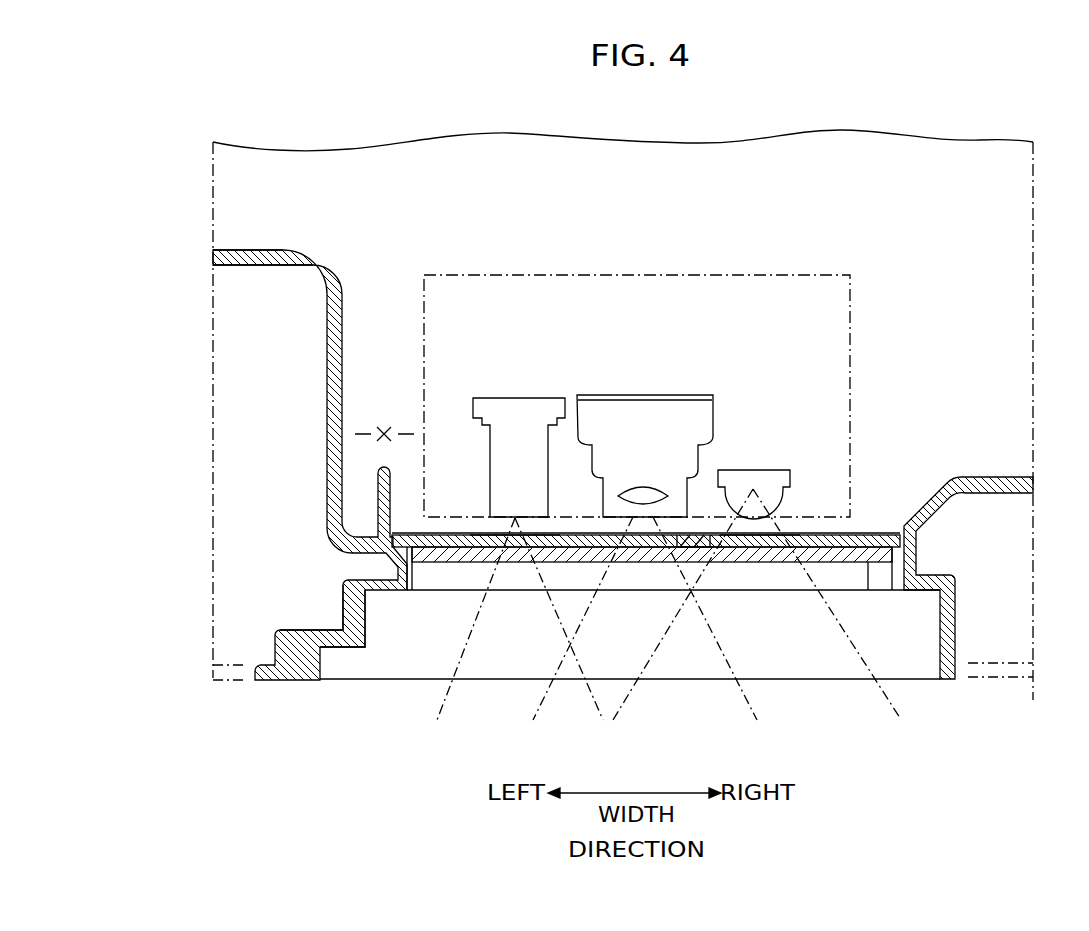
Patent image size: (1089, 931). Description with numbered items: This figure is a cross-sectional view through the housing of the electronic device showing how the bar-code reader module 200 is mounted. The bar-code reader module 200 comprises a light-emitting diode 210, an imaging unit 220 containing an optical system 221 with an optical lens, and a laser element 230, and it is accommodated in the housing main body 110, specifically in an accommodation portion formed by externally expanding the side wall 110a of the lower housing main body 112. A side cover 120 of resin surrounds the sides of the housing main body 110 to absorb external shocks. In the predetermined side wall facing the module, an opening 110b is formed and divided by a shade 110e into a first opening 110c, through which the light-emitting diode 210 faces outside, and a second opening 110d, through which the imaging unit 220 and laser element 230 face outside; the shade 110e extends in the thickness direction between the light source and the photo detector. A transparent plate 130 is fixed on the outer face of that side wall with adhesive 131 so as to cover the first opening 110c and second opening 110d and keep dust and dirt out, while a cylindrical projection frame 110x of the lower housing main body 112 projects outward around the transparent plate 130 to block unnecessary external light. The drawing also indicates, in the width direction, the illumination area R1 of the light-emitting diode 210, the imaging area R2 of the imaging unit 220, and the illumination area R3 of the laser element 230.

The housing main body 110 is at (327, 497).
The lower housing main body 112 is at (310, 465).
The side wall 110a is at (253, 266).
The opening 110b is at (915, 533).
The first opening 110c is at (800, 535).
The second opening 110d is at (483, 535).
The shade 110e is at (693, 535).
The projection frame 110x is at (343, 604).
The side cover 120 is at (1010, 683).
The transparent plate 130 is at (870, 565).
The adhesive 131 is at (862, 548).
The bar-code reader module 200 is at (421, 378).
The light-emitting diode 210 is at (762, 470).
The imaging unit 220 is at (605, 396).
The optical system 221 is at (660, 488).
The laser element 230 is at (515, 398).
The illumination area R1 is at (890, 700).
The imaging area R2 is at (745, 690).
The illumination area R3 is at (445, 695).